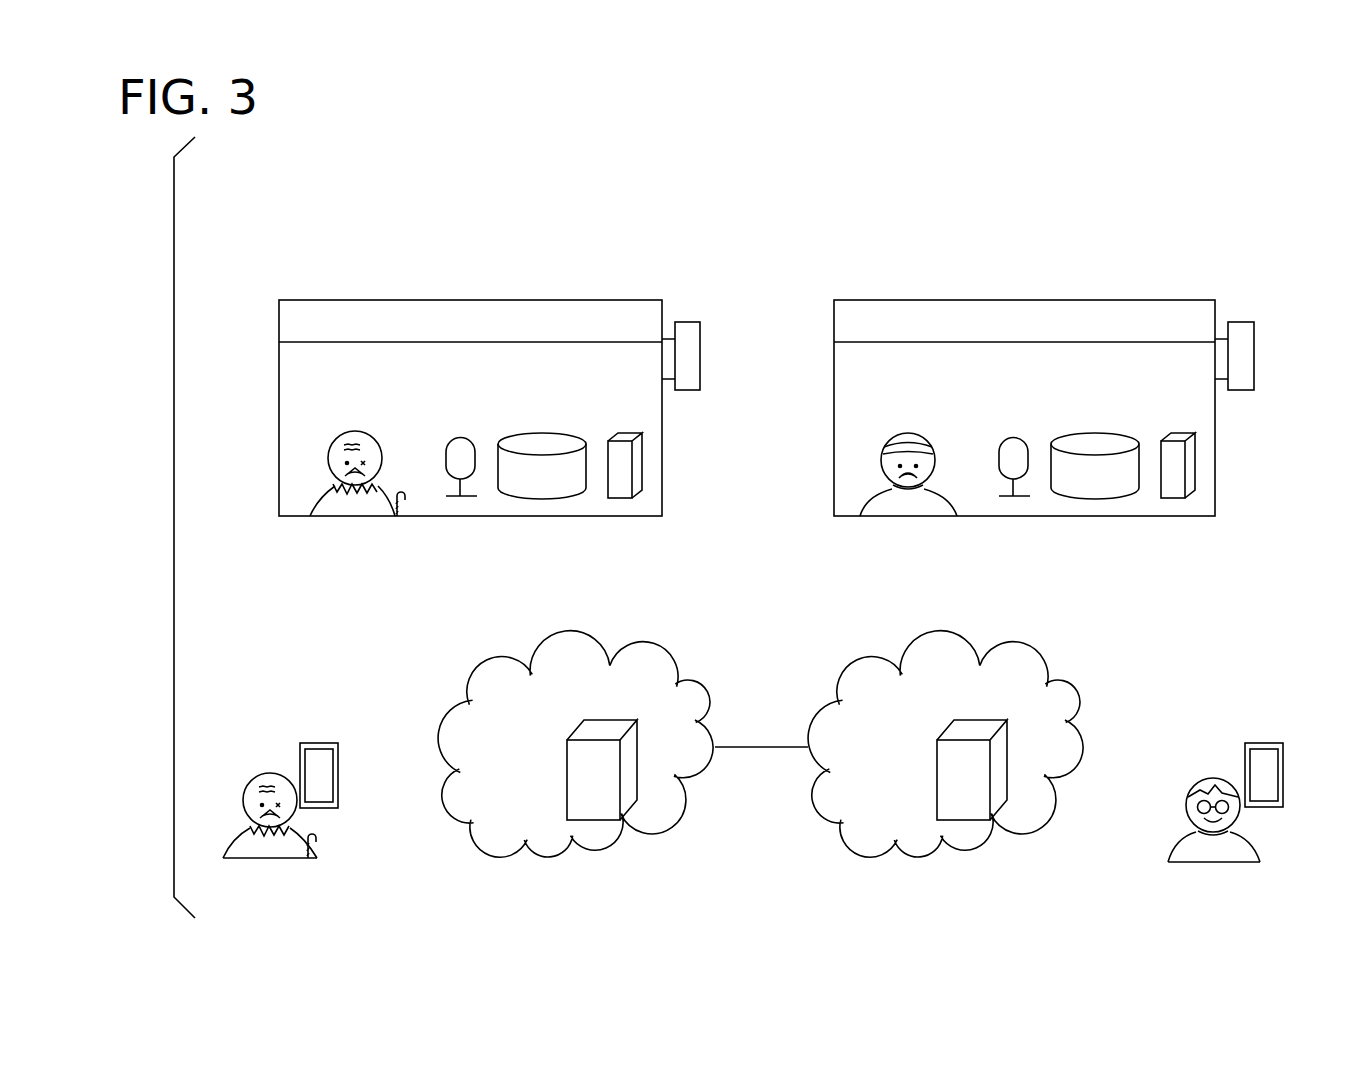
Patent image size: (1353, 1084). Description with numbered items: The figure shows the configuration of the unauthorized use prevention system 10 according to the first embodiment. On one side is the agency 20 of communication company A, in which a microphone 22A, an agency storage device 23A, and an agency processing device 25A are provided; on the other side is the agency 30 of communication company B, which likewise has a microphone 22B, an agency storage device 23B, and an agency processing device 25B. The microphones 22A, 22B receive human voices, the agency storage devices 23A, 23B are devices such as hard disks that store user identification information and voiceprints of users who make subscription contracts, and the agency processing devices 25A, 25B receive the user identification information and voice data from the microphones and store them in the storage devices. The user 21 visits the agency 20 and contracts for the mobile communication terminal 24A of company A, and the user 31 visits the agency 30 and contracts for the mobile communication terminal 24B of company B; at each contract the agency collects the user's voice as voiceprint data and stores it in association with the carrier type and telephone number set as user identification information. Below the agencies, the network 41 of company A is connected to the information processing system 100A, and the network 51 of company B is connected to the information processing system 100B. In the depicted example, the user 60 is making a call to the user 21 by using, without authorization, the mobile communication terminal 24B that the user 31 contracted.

The unauthorized use prevention system 10 is at (805, 242).
The agency 20 is at (470, 300).
The user 21 is at (352, 432).
The microphone 22A is at (458, 432).
The agency storage device 23A is at (538, 433).
The mobile communication terminal 24A is at (316, 742).
The agency processing device 25A is at (622, 432).
The agency 30 is at (1025, 300).
The user 31 is at (906, 432).
The microphone 22B is at (1011, 432).
The agency storage device 23B is at (1091, 433).
The mobile communication terminal 24B is at (1258, 742).
The agency processing device 25B is at (1175, 432).
The network 41 is at (547, 639).
The network 51 is at (945, 724).
The user 60 is at (1212, 773).
The information processing system 100A is at (603, 718).
The information processing system 100B is at (967, 746).